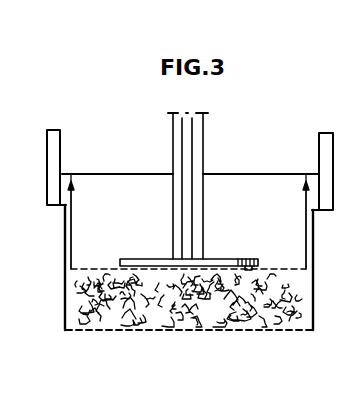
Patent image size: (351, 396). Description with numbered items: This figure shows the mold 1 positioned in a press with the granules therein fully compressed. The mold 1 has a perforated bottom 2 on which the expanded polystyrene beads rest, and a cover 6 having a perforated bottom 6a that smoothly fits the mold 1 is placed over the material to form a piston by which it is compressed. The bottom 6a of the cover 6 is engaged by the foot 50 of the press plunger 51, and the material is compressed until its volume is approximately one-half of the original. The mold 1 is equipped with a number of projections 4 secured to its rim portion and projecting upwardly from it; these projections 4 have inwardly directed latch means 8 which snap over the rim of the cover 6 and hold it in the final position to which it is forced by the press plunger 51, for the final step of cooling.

The mold 1 is at (63, 256).
The perforated bottom 2 is at (177, 333).
The projections 4 is at (48, 150).
The cover 6 is at (135, 184).
The perforated bottom 6a is at (100, 268).
The latch means 8 is at (67, 175).
The foot 50 is at (222, 257).
The press plunger 51 is at (197, 133).